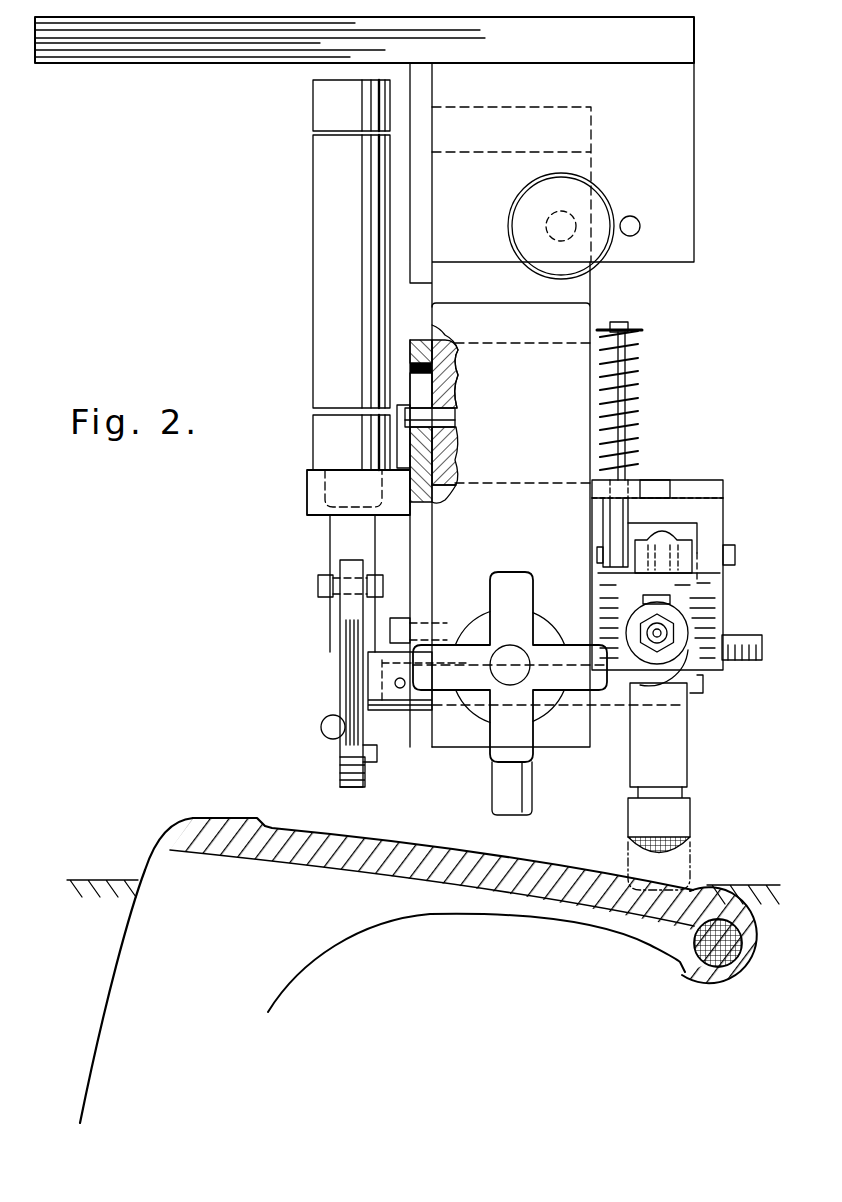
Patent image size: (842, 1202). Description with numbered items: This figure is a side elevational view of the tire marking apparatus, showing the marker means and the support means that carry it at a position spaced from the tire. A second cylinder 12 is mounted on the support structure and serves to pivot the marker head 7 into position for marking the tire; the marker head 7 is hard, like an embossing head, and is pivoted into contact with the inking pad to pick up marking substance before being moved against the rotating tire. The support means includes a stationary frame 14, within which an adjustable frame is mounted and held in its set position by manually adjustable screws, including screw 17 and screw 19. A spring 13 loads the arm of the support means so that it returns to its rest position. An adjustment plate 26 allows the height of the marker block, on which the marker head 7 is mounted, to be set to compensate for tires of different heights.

The marker head 7 is at (690, 810).
The second cylinder 12 is at (322, 296).
The spring 13 is at (632, 388).
The stationary frame 14 is at (592, 312).
The manually adjustable screw 17 is at (519, 572).
The manually adjustable screw 19 is at (598, 194).
The adjustment plate 26 is at (410, 347).